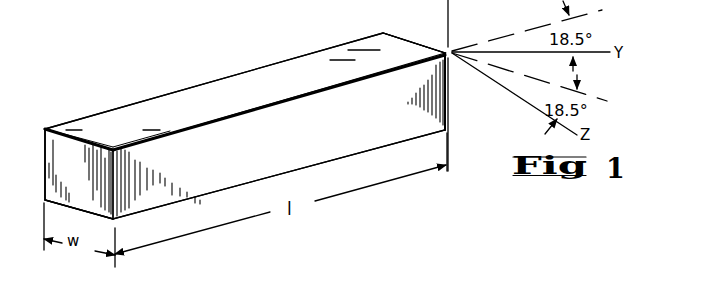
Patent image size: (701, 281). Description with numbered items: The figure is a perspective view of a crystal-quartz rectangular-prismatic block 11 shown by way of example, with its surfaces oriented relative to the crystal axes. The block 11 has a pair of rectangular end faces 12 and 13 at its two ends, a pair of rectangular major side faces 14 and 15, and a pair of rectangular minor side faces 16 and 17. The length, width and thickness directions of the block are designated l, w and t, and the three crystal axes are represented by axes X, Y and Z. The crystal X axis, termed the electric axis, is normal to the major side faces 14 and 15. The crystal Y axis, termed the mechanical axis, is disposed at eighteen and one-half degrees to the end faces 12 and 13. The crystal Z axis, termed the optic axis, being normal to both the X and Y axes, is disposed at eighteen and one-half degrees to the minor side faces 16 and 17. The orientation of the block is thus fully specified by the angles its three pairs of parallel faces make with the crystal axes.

The crystal-quartz rectangular-prismatic block 11 is at (241, 69).
The end face 12 is at (80, 176).
The end face 13 is at (402, 38).
The major side face 14 is at (232, 106).
The major side face 15 is at (73, 206).
The minor side face 16 is at (275, 154).
The minor side face 17 is at (44, 150).